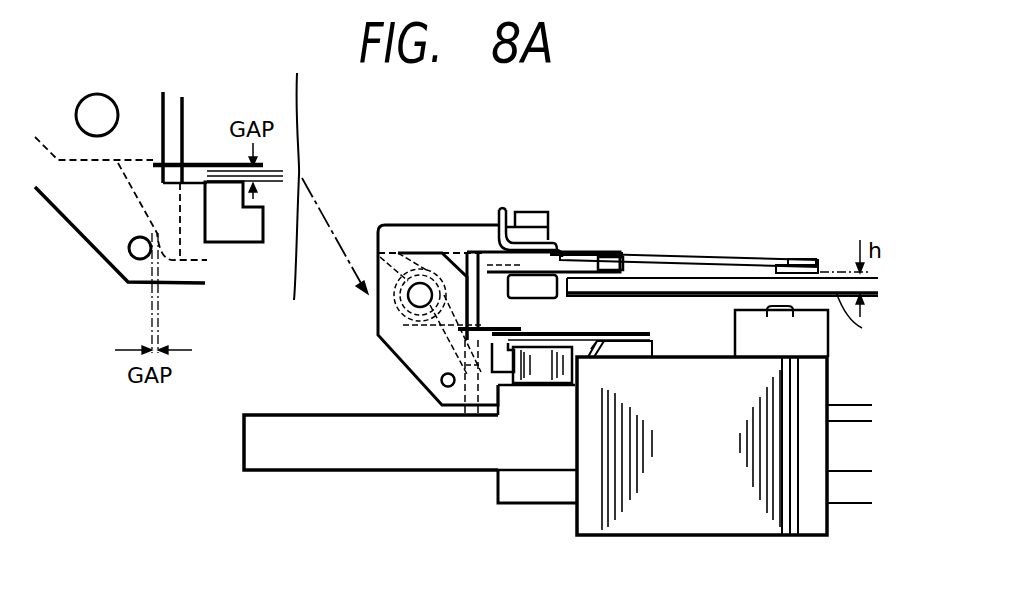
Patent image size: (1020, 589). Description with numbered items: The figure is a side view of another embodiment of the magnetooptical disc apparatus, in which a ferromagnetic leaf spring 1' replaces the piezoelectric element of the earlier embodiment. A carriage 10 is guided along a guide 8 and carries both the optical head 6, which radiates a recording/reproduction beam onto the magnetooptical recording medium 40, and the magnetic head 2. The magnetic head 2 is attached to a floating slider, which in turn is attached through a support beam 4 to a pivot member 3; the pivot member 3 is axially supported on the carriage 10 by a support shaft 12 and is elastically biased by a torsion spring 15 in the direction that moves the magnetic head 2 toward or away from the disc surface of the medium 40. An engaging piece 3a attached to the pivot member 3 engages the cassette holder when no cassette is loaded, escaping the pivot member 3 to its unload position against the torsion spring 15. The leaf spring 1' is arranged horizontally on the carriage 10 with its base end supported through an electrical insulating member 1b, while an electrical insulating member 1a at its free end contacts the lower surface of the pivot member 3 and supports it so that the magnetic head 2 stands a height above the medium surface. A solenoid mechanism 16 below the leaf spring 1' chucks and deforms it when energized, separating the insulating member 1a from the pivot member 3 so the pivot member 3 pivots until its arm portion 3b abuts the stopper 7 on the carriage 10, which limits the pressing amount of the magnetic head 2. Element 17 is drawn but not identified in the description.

The electrical insulating member 1a is at (489, 323).
The leaf spring 1' is at (571, 319).
The electrical insulating member 1b is at (650, 331).
The magnetic head 2 is at (800, 262).
The pivot member 3 is at (418, 227).
The engaging piece 3a is at (532, 218).
The arm portion 3b is at (447, 437).
The support beam 4 is at (702, 255).
The optical head 6 is at (817, 345).
The stopper 7 is at (129, 248).
The guide 8 is at (345, 461).
The carriage 10 is at (535, 504).
The support shaft 12 is at (107, 100).
The torsion spring 15 is at (375, 252).
The solenoid mechanism 16 is at (543, 385).
The contact plate 17 is at (606, 258).
The magnetooptical recording medium 40 is at (862, 328).